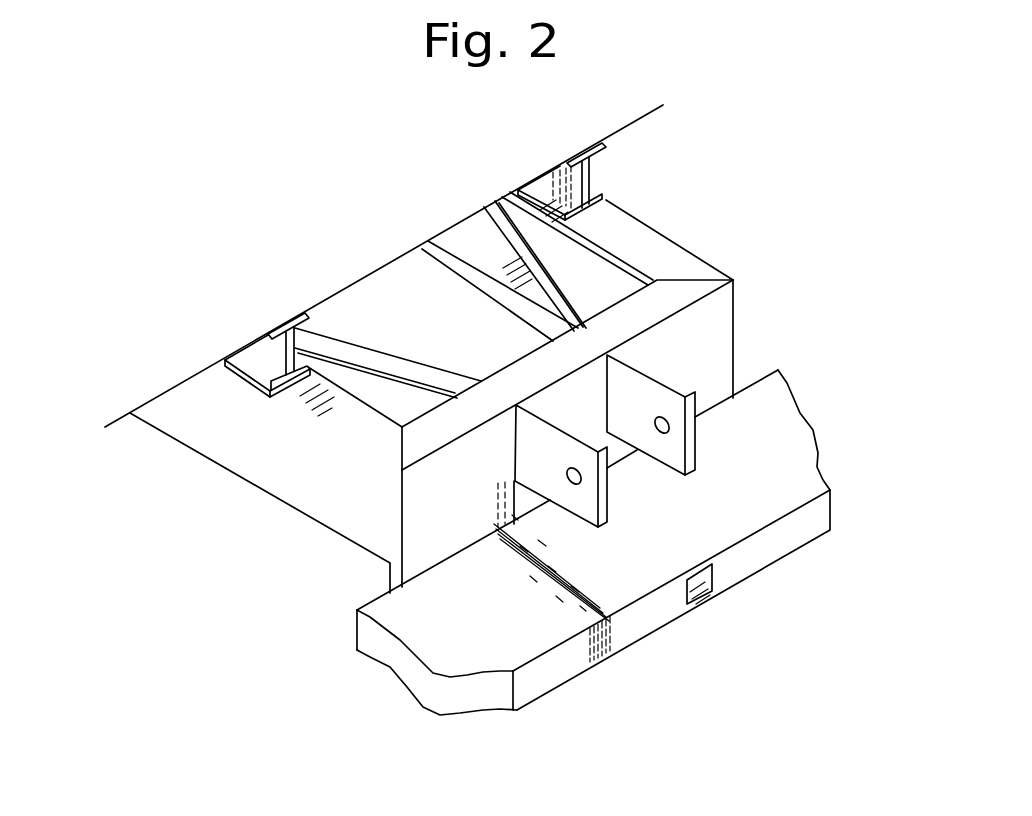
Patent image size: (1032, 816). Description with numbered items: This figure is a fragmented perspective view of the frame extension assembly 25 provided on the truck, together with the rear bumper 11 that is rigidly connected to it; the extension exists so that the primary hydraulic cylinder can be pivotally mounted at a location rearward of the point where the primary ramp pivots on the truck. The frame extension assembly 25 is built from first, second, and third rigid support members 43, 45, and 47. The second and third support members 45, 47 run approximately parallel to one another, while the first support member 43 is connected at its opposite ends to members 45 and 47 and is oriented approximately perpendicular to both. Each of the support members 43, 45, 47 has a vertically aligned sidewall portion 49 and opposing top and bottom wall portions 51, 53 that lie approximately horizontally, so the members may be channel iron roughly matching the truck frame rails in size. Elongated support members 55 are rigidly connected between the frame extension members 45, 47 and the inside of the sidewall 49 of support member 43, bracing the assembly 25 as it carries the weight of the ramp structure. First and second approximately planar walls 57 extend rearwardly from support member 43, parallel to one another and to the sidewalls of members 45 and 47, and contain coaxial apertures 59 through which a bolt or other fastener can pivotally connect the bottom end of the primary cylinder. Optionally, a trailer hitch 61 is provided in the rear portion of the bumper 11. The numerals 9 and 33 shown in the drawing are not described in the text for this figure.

The rail assembly 9 is at (366, 220).
The rear bumper 11 is at (518, 650).
The frame extension assembly 25 is at (182, 470).
The I-beam rail 33 is at (270, 350).
The first rigid support member 43 is at (715, 342).
The second rigid support member 45 is at (640, 240).
The third rigid support member 47 is at (265, 463).
The sidewall portion 49 is at (717, 303).
The top wall portion 51 is at (667, 258).
The bottom wall portion 53 is at (492, 258).
The elongated support member 55 is at (350, 351).
The planar wall 57 is at (673, 453).
The aperture 59 is at (668, 427).
The trailer hitch 61 is at (720, 590).